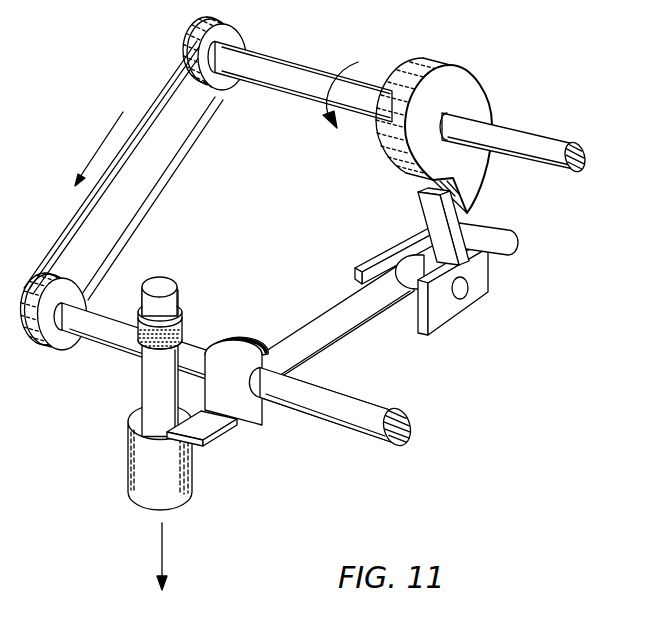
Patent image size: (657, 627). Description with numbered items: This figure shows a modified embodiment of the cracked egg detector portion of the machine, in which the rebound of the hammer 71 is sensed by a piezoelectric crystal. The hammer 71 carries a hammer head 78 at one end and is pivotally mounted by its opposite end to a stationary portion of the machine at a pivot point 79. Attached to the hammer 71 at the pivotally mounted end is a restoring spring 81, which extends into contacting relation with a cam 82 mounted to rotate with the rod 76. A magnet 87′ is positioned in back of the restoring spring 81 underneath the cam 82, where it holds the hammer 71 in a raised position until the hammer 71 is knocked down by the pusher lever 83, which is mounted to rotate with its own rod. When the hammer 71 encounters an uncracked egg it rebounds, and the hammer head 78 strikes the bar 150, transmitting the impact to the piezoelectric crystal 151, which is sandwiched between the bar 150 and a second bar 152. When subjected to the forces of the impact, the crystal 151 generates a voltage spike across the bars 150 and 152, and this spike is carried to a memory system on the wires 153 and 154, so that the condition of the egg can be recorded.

The hammer 71 is at (346, 330).
The rod 76 is at (292, 72).
The hammer head 78 is at (141, 476).
The pivot point 79 is at (463, 288).
The restoring spring 81 is at (425, 211).
The cam 82 is at (437, 65).
The pusher lever 83 is at (220, 431).
The magnet 87′ is at (492, 228).
The bar 150 is at (144, 372).
The piezoelectric crystal 151 is at (138, 345).
The bar 152 is at (158, 287).
The wire 153 is at (178, 306).
The wire 154 is at (185, 341).